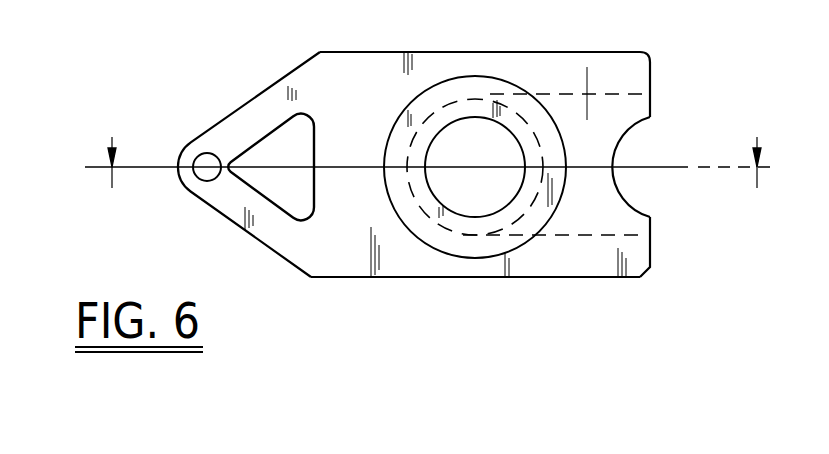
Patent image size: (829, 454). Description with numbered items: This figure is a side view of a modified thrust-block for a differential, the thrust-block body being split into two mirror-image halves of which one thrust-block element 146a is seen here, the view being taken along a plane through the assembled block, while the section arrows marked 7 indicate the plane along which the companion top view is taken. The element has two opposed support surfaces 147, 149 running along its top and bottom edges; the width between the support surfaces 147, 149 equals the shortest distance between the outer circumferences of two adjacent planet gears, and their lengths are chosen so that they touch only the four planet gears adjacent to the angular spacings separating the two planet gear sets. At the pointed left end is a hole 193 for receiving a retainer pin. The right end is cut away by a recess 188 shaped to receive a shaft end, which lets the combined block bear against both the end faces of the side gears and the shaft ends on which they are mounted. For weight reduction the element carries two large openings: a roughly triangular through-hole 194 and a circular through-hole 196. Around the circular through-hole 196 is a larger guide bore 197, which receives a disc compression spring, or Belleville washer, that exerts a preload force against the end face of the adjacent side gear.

The thrust-block element 146a is at (343, 80).
The support surface 147 is at (392, 52).
The support surface 149 is at (428, 278).
The recess 188 is at (628, 235).
The hole 193 is at (207, 153).
The through-hole 194 is at (307, 180).
The through-hole 196 is at (500, 200).
The guide bore 197 is at (540, 100).
The section plane 7— 7 is at (435, 178).